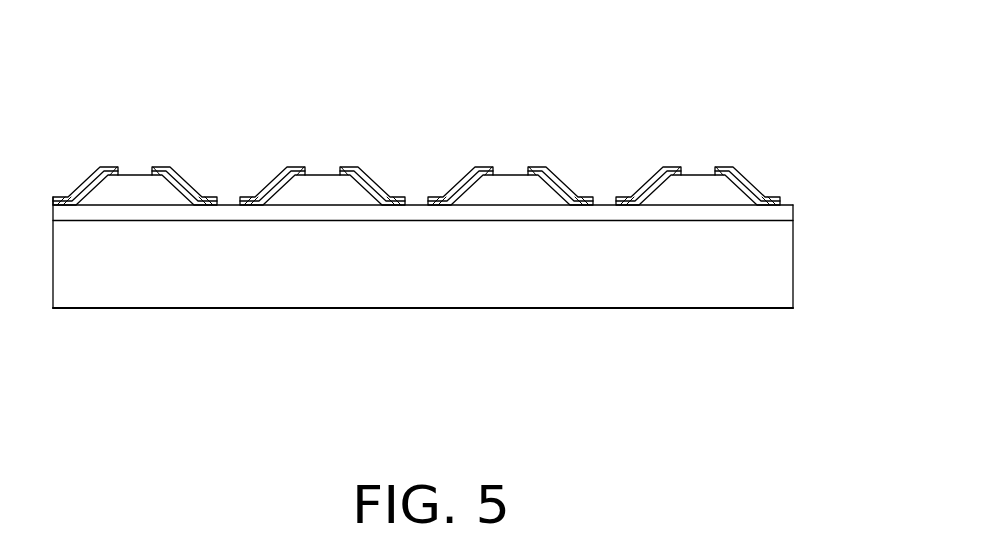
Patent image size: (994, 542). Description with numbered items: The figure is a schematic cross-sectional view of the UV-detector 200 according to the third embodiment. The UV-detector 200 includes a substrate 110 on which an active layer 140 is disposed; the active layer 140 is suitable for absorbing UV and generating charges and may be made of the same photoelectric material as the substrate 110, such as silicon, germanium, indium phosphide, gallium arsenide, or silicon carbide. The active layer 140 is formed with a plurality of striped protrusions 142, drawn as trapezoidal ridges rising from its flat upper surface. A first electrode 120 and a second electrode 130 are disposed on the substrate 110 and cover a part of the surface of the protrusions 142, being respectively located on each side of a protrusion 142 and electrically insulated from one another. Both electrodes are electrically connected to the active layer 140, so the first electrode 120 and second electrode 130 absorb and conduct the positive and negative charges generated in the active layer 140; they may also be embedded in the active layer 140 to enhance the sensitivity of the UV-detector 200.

The substrate 110 is at (748, 270).
The first electrode 120 is at (725, 172).
The second electrode 130 is at (645, 185).
The active layer 140 is at (780, 213).
The striped protrusion 142 is at (503, 197).
The UV-detector 200 is at (469, 198).